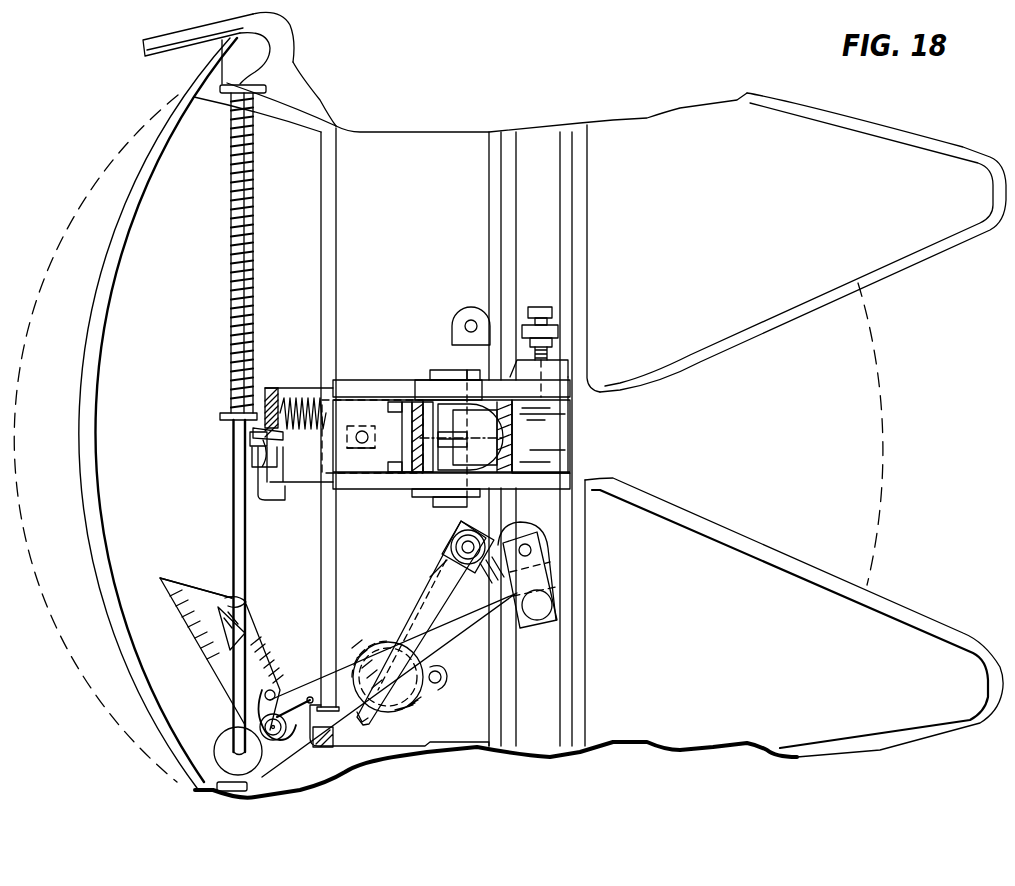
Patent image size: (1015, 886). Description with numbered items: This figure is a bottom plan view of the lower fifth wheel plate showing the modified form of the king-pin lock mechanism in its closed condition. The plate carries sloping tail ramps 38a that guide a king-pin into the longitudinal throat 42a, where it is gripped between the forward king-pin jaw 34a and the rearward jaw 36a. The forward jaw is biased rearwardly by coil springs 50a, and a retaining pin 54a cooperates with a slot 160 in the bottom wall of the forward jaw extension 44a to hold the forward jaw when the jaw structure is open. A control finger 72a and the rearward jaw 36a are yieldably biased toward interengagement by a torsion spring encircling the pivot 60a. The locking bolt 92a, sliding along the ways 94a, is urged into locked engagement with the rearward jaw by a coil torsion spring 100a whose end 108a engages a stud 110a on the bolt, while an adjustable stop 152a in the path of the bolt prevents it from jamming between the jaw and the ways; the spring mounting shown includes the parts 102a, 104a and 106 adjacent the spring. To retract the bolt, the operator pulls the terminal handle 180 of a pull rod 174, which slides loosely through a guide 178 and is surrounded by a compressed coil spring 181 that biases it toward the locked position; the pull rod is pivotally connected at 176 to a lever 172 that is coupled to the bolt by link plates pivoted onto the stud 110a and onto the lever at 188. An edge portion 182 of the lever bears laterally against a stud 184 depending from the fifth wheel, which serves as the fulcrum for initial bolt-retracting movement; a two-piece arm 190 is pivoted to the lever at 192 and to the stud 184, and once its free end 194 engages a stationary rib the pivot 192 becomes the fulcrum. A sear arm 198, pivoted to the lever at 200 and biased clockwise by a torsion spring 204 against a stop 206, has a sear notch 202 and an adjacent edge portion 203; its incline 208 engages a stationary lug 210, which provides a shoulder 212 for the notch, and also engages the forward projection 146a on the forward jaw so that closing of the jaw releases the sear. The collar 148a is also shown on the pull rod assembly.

The tail ramp 38a is at (912, 210).
The terminal handle 180 is at (176, 48).
The guide 178 is at (270, 88).
The compressed coil spring 181 is at (232, 311).
The collar 148a is at (257, 430).
The shoulder 212 is at (256, 454).
The pull rod 174 is at (233, 516).
The stationary lug 210 is at (263, 500).
The forward projection 146a is at (272, 470).
The coil spring 50a is at (302, 392).
The slot 160 is at (347, 426).
The retaining pin 54a is at (376, 452).
The forward jaw extension 44a is at (347, 476).
The control finger 72a is at (430, 476).
The forward king-pin jaw 34a is at (440, 402).
The pivot 60a is at (445, 376).
The rearward jaw 36a is at (500, 433).
The longitudinal throat 42a is at (534, 481).
The adjustable stop 152a is at (553, 353).
The locking bolt 92a is at (560, 413).
The stud 184 is at (480, 534).
The ways 94a is at (556, 525).
The pivot 188 is at (531, 551).
The spring end 108a is at (547, 588).
The stud 110a is at (539, 606).
The edge portion 182 is at (438, 567).
The two-piece arm 190 is at (430, 578).
The pivot 192 is at (403, 630).
The pin 106 is at (438, 669).
The hub 104a is at (442, 682).
The coil torsion spring 100a is at (418, 700).
The cam 102a is at (403, 710).
The free end 194 is at (362, 722).
The incline 208 is at (207, 575).
The edge portion 203 is at (233, 598).
The sear notch 202 is at (240, 614).
The sear arm 198 is at (203, 641).
The lever 172 is at (310, 696).
The stop 206 is at (272, 690).
The torsion spring 204 is at (250, 713).
The pivot 176 is at (228, 752).
The pivot 200 is at (276, 740).